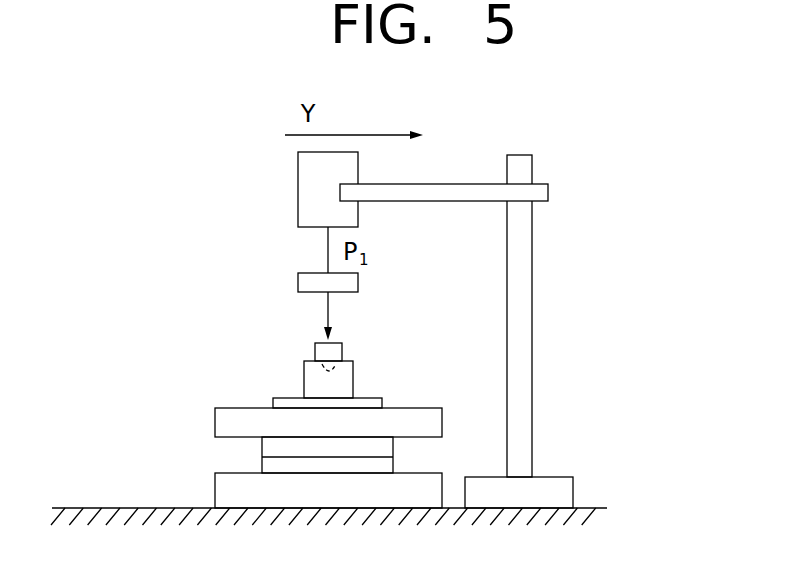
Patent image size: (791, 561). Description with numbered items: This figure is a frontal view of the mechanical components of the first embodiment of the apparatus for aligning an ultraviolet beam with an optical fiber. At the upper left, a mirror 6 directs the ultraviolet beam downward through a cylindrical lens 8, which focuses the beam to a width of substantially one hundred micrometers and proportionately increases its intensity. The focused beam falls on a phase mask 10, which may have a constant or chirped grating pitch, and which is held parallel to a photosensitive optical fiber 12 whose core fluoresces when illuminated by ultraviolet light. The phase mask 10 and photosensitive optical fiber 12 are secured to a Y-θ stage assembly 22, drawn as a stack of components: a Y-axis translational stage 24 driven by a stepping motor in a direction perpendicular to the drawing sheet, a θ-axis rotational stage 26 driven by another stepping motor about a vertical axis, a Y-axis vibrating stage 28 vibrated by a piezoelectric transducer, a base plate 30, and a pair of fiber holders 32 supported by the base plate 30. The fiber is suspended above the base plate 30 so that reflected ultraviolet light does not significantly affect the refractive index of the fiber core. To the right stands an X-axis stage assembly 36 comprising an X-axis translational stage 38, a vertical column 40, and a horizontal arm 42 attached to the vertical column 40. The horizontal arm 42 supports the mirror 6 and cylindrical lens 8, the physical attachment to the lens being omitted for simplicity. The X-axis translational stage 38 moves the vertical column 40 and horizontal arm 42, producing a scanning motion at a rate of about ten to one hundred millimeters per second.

The mirror 6 is at (298, 192).
The cylindrical lens 8 is at (298, 284).
The phase mask 10 is at (315, 352).
The photosensitive optical fiber 12 is at (343, 353).
The Y-θ stage assembly 22 is at (244, 412).
The Y-axis translational stage 24 is at (275, 483).
The θ-axis rotational stage 26 is at (262, 463).
The Y-axis vibrating stage 28 is at (215, 423).
The base plate 30 is at (273, 403).
The fiber holders 32 is at (303, 385).
The X-axis stage assembly 36 is at (508, 331).
The X-axis translational stage 38 is at (555, 477).
The vertical column 40 is at (528, 298).
The horizontal arm 42 is at (548, 194).